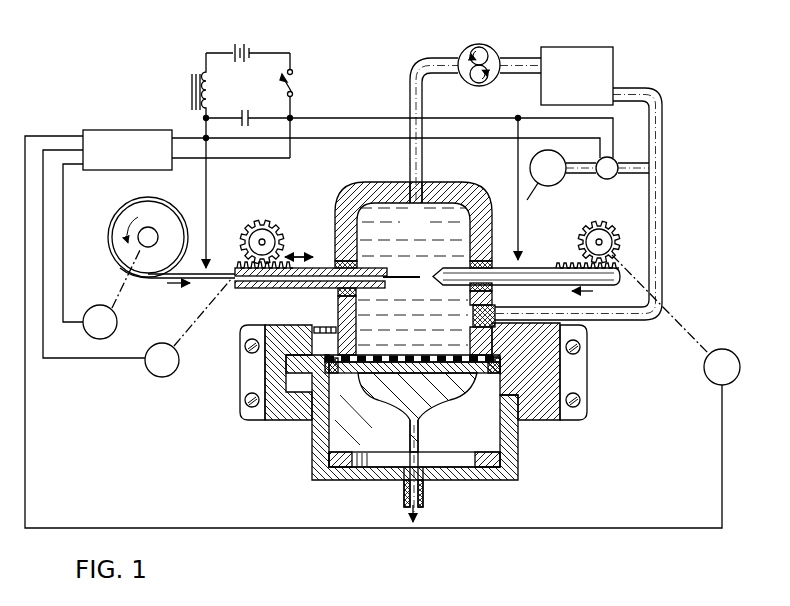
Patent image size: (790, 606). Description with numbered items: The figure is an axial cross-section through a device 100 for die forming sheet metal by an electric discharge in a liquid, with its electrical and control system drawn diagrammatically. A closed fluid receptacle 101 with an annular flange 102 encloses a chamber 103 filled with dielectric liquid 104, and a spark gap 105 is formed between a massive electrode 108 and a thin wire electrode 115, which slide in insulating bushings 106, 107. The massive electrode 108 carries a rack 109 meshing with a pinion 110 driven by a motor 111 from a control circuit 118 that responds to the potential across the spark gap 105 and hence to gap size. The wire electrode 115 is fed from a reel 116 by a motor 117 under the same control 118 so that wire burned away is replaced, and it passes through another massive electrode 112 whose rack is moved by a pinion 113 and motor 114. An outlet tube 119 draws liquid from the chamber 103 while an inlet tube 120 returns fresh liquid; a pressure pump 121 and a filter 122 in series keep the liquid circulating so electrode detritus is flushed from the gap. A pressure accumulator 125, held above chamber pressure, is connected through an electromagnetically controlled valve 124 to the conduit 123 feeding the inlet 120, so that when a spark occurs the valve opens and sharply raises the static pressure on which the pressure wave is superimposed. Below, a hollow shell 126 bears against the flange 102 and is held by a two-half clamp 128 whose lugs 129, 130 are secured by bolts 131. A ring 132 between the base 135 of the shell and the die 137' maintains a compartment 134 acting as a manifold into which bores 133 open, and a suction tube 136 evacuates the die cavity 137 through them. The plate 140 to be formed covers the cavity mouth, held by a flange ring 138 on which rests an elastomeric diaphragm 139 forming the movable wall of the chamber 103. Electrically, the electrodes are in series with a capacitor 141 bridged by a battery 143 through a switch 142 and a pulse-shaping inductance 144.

The device 100 is at (238, 408).
The closed fluid receptacle 101 is at (342, 205).
The annular flange 102 is at (303, 350).
The chamber 103 is at (377, 188).
The dielectric liquid 104 is at (457, 218).
The spark gap 105 is at (427, 280).
The insulating bushing 106 is at (335, 257).
The insulating bushing 107 is at (494, 289).
The massive electrode 108 is at (600, 283).
The rack 109 is at (566, 262).
The pinion 110 is at (617, 243).
The motor 111 is at (730, 350).
The massive electrode 112 is at (327, 286).
The pinion 113 is at (252, 222).
The motor 114 is at (147, 370).
The thin wire electrode 115 is at (397, 279).
The reel 116 is at (118, 202).
The motor 117 is at (115, 312).
The control circuit 118 is at (143, 128).
The outlet tube 119 is at (418, 200).
The inlet tube 120 is at (473, 323).
The pressure pump 121 is at (466, 48).
The filter 122 is at (600, 47).
The conduit 123 is at (662, 205).
The electromagnetically controlled valve 124 is at (616, 160).
The pressure accumulator 125 is at (556, 183).
The hollow shell 126 is at (520, 425).
The clamp 128 is at (543, 422).
The lug 129 is at (590, 400).
The lug 130 is at (245, 423).
The bolt 131 is at (246, 342).
The ring 132 is at (328, 462).
The bore 133 is at (410, 440).
The compartment 134 is at (450, 458).
The base 135 is at (367, 481).
The suction tube 136 is at (421, 498).
The die cavity 137 is at (417, 412).
The die 137' is at (531, 456).
The flange ring 138 is at (503, 356).
The diaphragm 139 is at (367, 348).
The plate 140 is at (375, 368).
The capacitor 141 is at (244, 107).
The switch 142 is at (295, 75).
The battery 143 is at (247, 47).
The pulse-shaping inductance 144 is at (203, 72).